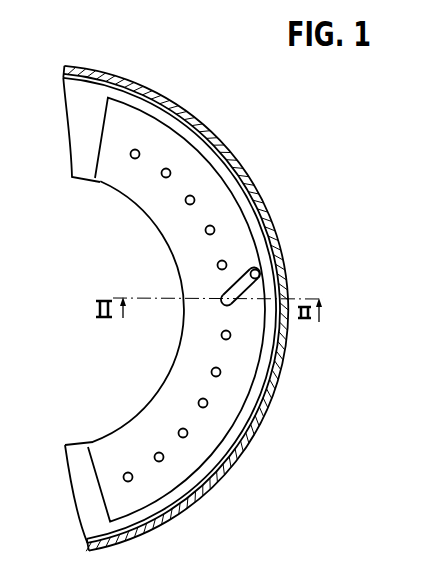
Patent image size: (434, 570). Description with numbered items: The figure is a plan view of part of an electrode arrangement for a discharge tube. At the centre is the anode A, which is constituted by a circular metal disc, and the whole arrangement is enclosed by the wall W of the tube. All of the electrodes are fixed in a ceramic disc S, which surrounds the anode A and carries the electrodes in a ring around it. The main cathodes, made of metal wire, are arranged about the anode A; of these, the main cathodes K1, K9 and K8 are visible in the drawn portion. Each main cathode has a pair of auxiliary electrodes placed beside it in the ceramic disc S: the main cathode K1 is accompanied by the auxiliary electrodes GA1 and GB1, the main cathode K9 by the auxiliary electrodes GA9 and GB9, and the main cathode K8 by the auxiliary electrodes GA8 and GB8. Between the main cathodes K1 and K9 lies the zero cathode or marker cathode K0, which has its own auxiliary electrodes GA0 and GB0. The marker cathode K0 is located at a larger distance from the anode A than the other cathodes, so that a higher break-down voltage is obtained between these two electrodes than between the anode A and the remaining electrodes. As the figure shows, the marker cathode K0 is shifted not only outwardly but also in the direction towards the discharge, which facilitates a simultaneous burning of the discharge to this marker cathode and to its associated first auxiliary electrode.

The ceramic disc S is at (140, 125).
The wall of the tube W is at (170, 118).
The anode A is at (96, 370).
The auxiliary electrode GB1 is at (139, 151).
The auxiliary electrode GA1 is at (170, 170).
The main cathode K1 is at (194, 197).
The auxiliary electrode of the marker cathode GB0 is at (214, 227).
The auxiliary electrode of the marker cathode GA0 is at (226, 262).
The zero cathode or marker cathode K0 is at (259, 272).
The auxiliary electrode GB9 is at (231, 336).
The auxiliary electrode GA9 is at (221, 373).
The main cathode K9 is at (208, 404).
The auxiliary electrode GB8 is at (187, 435).
The auxiliary electrode GA8 is at (163, 459).
The main cathode K8 is at (132, 479).